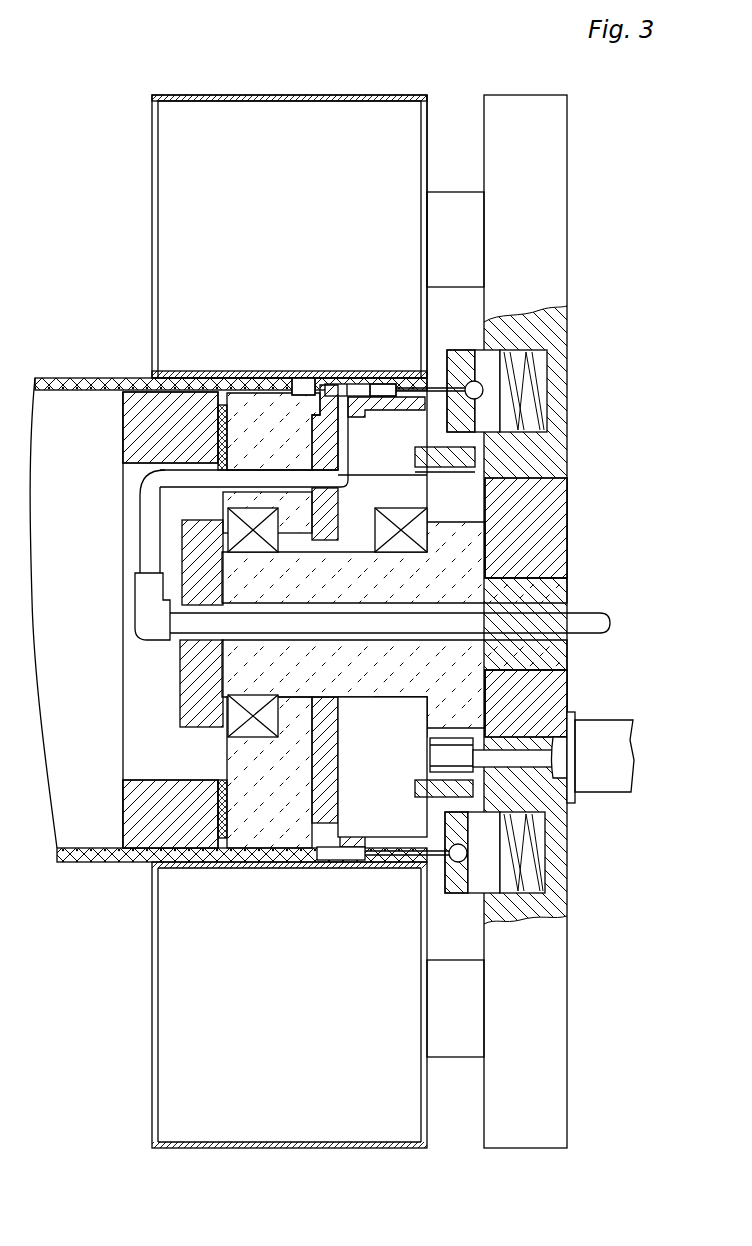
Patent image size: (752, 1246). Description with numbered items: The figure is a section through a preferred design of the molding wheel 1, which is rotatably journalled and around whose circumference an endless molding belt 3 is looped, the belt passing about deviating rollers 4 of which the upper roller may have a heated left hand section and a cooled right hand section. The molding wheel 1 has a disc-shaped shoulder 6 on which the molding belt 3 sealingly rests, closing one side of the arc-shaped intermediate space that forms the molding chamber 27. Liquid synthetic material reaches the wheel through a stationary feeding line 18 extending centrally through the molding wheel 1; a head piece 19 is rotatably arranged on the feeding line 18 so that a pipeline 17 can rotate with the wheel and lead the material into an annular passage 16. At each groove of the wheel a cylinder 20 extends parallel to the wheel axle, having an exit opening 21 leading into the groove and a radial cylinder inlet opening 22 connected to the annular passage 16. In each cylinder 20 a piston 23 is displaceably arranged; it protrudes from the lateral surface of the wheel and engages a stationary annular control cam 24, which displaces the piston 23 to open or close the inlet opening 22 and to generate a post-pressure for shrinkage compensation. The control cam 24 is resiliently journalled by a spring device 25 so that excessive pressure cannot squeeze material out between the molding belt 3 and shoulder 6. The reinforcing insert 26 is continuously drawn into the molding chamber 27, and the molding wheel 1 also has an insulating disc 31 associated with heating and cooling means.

The molding wheel 1 is at (137, 445).
The molding belt 3 is at (333, 95).
The deviating roller 4 is at (181, 194).
The shoulder 6 is at (402, 388).
The annular passage 16 is at (482, 477).
The pipeline 17 is at (148, 543).
The feeding line 18 is at (587, 623).
The head piece 19 is at (148, 623).
The cylinder 20 is at (358, 392).
The exit opening 21 is at (322, 868).
The cylinder inlet opening 22 is at (343, 408).
The piston 23 is at (380, 394).
The control cam 24 is at (480, 362).
The spring device 25 is at (532, 382).
The reinforcing insert 26 is at (306, 388).
The molding chamber 27 is at (297, 386).
The insulating disc 31 is at (211, 868).